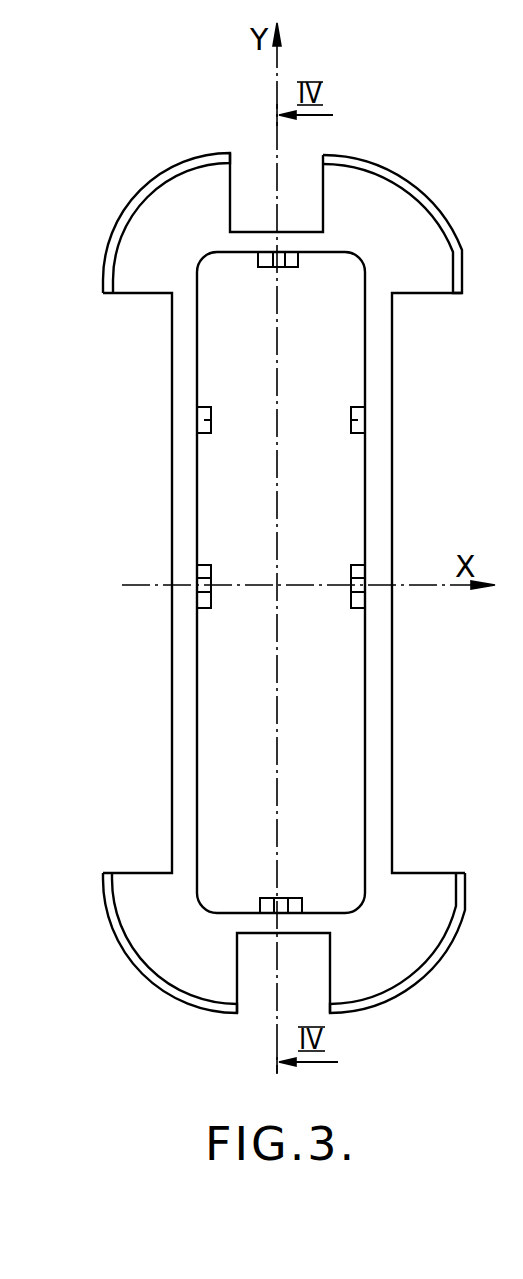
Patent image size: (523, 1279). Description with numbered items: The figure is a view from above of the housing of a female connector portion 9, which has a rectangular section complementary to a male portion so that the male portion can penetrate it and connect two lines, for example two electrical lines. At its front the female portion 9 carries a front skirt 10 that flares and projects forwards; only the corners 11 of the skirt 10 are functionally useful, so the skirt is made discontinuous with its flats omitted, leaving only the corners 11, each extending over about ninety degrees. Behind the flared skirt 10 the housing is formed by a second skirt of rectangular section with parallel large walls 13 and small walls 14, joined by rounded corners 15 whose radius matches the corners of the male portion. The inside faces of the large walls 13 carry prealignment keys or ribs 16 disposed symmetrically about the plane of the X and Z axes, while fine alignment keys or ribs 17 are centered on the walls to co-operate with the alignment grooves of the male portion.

The female connector portion 9 is at (160, 367).
The front skirt 10 is at (405, 166).
The corners 11 is at (162, 213).
The large walls 13 is at (183, 450).
The small walls 14 is at (255, 240).
The rounded corners 15 is at (356, 260).
The prealignment keys or ribs 16 is at (352, 428).
The fine alignment keys or ribs 17 is at (283, 265).